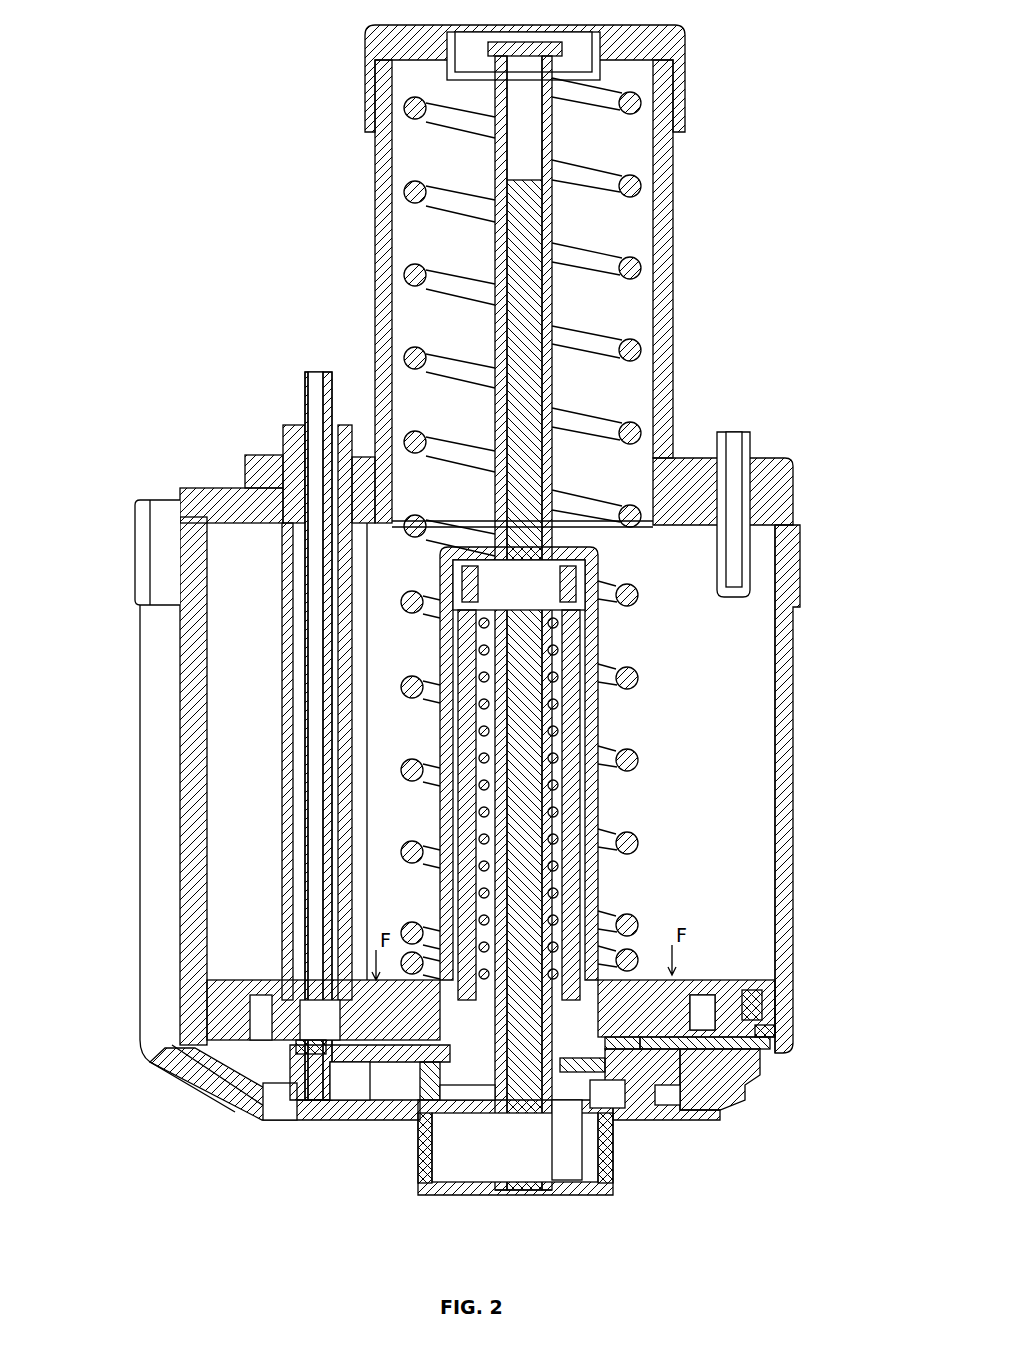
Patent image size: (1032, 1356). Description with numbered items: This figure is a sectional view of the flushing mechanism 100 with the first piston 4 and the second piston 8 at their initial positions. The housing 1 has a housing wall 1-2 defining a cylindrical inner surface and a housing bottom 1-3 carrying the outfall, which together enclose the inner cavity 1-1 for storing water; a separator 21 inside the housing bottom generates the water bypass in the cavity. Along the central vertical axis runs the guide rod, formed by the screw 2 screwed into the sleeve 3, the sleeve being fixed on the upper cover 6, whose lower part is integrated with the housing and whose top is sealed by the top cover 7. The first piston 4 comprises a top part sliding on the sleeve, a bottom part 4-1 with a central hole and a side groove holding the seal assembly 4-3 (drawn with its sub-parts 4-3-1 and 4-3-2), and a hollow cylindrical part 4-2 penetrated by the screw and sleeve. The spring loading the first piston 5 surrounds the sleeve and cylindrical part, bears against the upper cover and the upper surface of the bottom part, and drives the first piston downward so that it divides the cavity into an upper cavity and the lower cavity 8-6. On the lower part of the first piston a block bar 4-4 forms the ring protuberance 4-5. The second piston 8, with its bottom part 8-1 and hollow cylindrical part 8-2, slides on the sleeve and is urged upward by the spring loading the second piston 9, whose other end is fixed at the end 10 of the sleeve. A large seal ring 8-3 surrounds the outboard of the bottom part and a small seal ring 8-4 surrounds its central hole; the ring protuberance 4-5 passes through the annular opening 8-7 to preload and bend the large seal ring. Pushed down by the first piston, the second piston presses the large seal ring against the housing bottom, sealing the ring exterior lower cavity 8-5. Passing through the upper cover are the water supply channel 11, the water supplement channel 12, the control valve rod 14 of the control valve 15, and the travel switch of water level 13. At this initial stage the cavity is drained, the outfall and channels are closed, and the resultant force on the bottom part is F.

The flushing mechanism 100 is at (758, 62).
The top cover 7 is at (600, 30).
The sleeve 3 is at (555, 152).
The spring loading the first piston 5 is at (640, 252).
The screw 2 is at (532, 397).
The water supplement channel 12 is at (318, 380).
The water supply channel 11 is at (298, 445).
The control valve rod 14 is at (338, 425).
The travel switch of water level 13 is at (750, 436).
The housing wall 1-2 is at (140, 505).
The upper cover 6 is at (795, 497).
The housing 1 is at (790, 690).
The inner cavity 1-1 is at (730, 805).
The housing bottom 1-3 is at (300, 1025).
The cylindrical part of the first piston 4-2 is at (595, 822).
The spring loading the second piston 9 is at (560, 892).
The cylindrical part of the second piston 8-2 is at (585, 930).
The first piston 4 is at (600, 978).
The bottom part of the first piston 4-1 is at (705, 985).
The seal ring lip 4-3-2 is at (770, 995).
The seal assembly of the first piston 4-3 is at (770, 1022).
The seal ring base 4-3-1 is at (770, 1037).
The block bar 4-4 is at (762, 1062).
The ring protuberance 4-5 is at (690, 1060).
The second piston 8 is at (545, 1060).
The bottom part of the second piston 8-1 is at (640, 1100).
The large seal ring 8-3 is at (690, 1098).
The small seal ring 8-4 is at (440, 1095).
The ring exterior lower cavity 8-5 is at (615, 1135).
The lower cavity 8-6 is at (470, 1125).
The annular opening 8-7 is at (680, 1060).
The end of the sleeve 10 is at (560, 1105).
The control valve 15 is at (450, 1090).
The separator 21 is at (345, 1062).